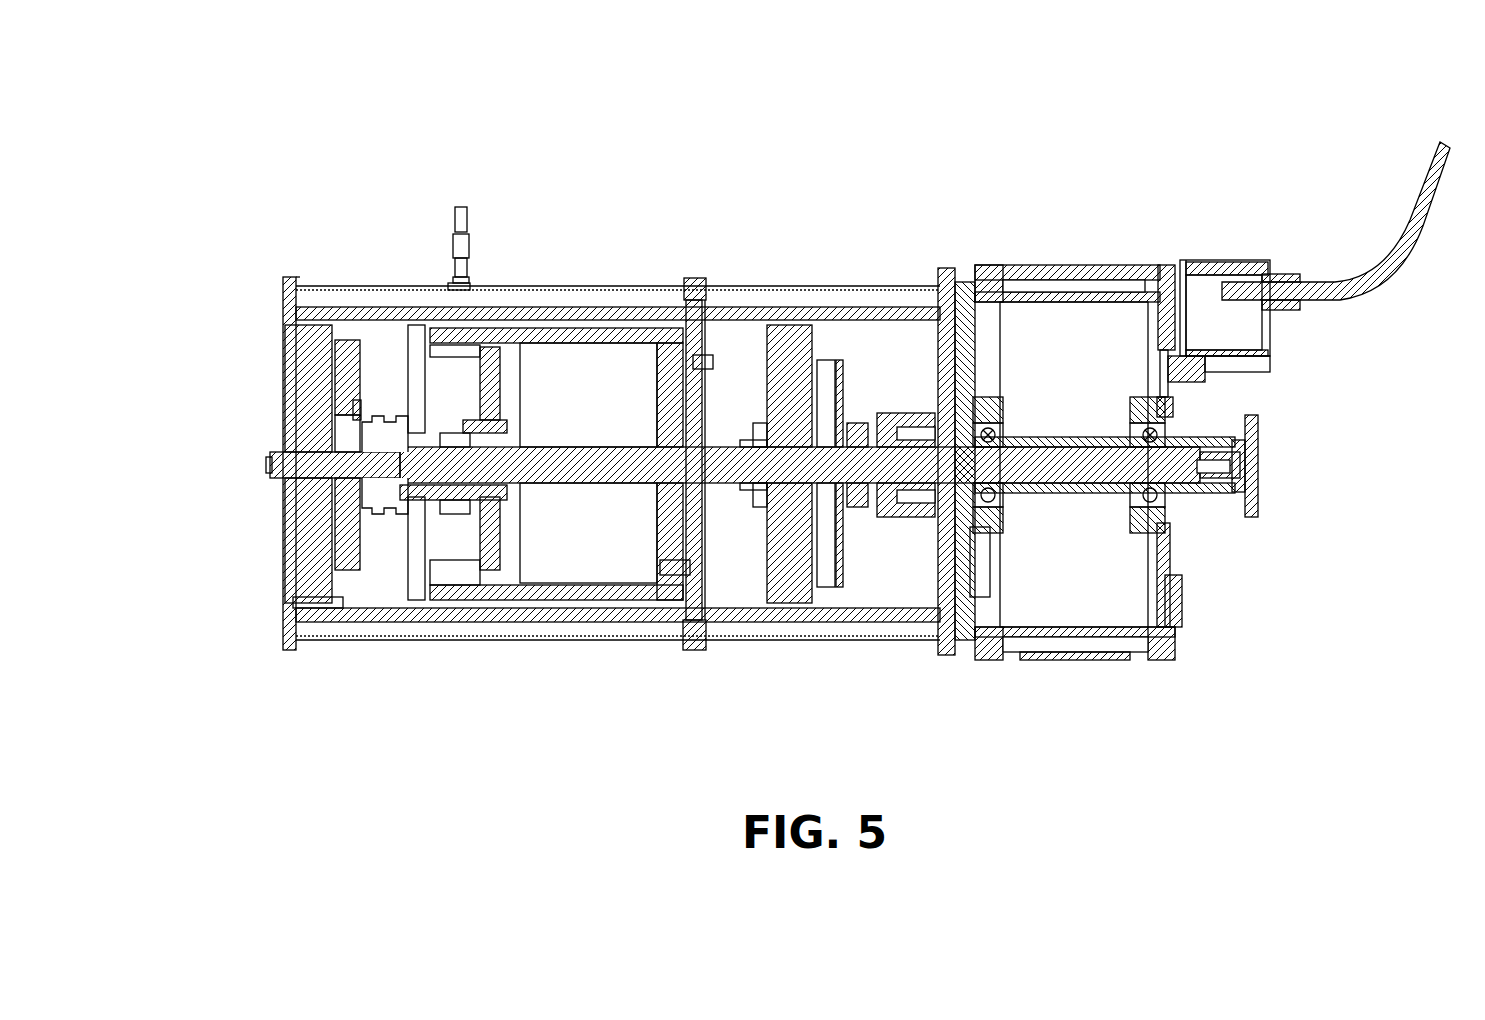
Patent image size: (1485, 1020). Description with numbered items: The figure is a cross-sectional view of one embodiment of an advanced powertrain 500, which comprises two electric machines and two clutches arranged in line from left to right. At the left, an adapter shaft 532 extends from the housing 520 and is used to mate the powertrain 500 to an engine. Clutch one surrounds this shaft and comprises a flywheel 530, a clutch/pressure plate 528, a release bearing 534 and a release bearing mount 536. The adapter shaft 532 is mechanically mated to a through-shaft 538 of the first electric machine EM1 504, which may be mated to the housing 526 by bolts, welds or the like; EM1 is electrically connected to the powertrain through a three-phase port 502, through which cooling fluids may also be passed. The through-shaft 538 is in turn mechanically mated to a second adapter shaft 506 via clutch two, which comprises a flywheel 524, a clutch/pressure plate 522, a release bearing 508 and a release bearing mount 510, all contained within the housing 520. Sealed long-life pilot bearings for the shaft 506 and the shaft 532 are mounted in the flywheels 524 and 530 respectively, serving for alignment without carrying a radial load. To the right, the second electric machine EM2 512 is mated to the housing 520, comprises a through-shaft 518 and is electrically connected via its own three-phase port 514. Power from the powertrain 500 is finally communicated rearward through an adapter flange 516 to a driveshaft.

The powertrain 500 is at (270, 138).
The 3-phase port 502 is at (468, 228).
The EM1 504 is at (585, 381).
The adapter shaft 506 is at (801, 455).
The release bearing 508 is at (855, 430).
The release bearing mount 510 is at (901, 410).
The EM2 512 is at (1076, 254).
The 3-phase port 514 is at (1400, 210).
The adapter flange 516 is at (1262, 482).
The through-shaft 518 is at (1058, 500).
The housing 520 is at (826, 646).
The clutch/pressure plate 522 is at (810, 594).
The flywheel 524 is at (756, 567).
The housing 526 is at (484, 624).
The clutch/pressure plate 528 is at (334, 594).
The flywheel 530 is at (273, 576).
The adapter shaft 532 is at (302, 456).
The release bearing 534 is at (351, 441).
The release bearing mount 536 is at (395, 408).
The through-shaft 538 is at (584, 488).